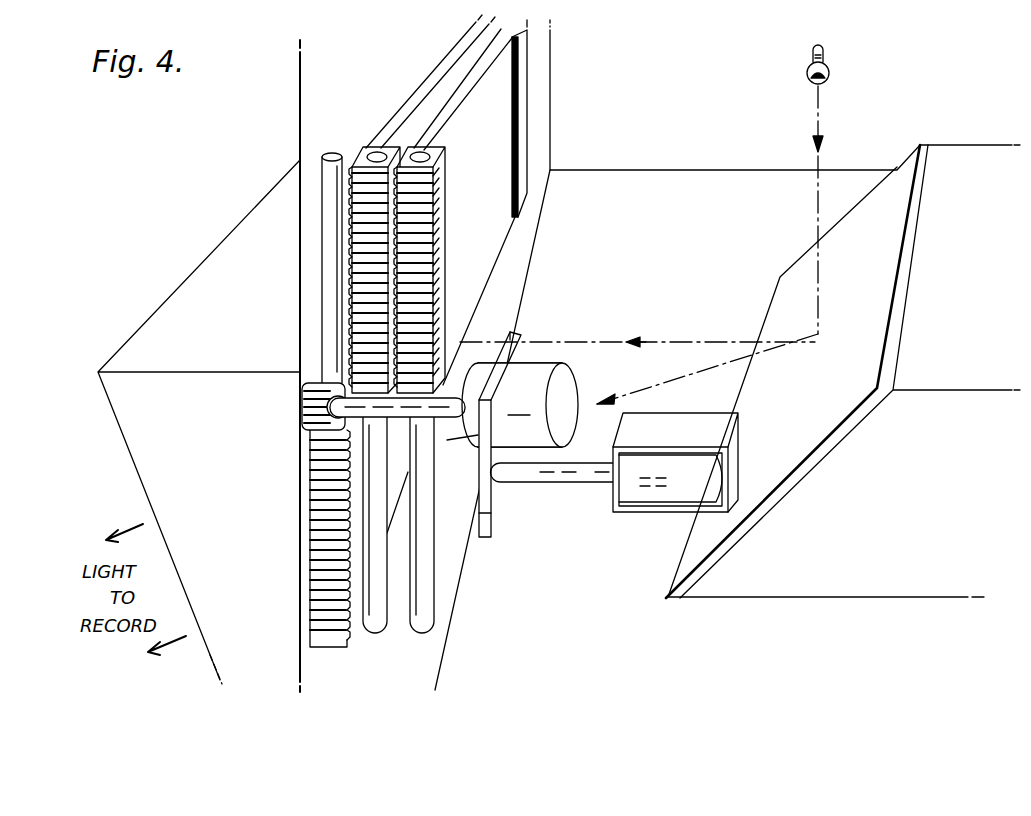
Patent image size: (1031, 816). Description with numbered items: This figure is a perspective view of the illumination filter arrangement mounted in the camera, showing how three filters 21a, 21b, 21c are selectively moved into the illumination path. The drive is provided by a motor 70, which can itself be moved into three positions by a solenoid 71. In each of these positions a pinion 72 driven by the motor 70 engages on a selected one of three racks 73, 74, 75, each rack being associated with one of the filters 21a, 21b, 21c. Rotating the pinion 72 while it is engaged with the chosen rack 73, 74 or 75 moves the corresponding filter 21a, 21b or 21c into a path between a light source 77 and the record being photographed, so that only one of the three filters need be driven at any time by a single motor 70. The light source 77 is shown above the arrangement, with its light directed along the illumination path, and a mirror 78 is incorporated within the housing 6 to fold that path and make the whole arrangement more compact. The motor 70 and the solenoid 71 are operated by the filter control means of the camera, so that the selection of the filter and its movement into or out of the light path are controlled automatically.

The housing 6 is at (300, 133).
The filter 21a is at (371, 592).
The filter 21b is at (440, 80).
The filter 21c is at (455, 96).
The motor 70 is at (538, 364).
The solenoid 71 is at (670, 490).
The pinion 72 is at (303, 409).
The rack 73 is at (328, 647).
The rack 74 is at (365, 183).
The rack 75 is at (432, 222).
The light source 77 is at (806, 72).
The mirror 78 is at (783, 493).